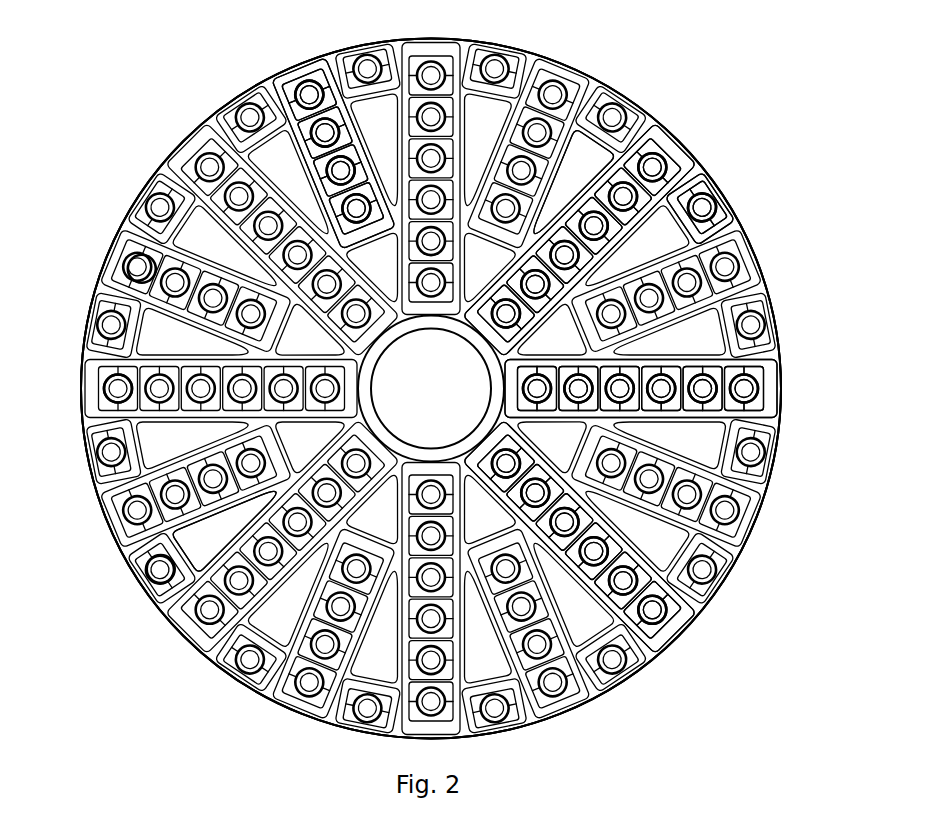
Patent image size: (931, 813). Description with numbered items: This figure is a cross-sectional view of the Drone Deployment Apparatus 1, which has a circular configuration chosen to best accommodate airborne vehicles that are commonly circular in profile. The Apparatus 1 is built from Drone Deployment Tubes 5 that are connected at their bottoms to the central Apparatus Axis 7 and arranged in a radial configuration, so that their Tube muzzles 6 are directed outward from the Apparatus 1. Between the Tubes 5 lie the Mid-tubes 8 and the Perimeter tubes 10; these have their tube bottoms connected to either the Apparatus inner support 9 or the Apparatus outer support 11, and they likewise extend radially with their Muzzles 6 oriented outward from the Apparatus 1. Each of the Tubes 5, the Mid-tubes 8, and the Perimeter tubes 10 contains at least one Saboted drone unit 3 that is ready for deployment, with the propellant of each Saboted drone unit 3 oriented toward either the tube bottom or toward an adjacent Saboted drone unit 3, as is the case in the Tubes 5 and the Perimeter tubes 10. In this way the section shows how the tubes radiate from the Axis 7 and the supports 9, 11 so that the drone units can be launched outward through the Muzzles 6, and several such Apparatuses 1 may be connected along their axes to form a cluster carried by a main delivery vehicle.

The Drone Deployment Apparatus 1 is at (267, 697).
The Saboted drone unit 3 is at (137, 265).
The Drone Deployment Tube 5 is at (165, 168).
The Tube muzzle 6 is at (300, 65).
The Apparatus Axis 7 is at (490, 389).
The Mid-tube 8 is at (593, 695).
The Apparatus inner support 9 is at (215, 518).
The Perimeter tube 10 is at (700, 175).
The Apparatus outer support 11 is at (583, 150).